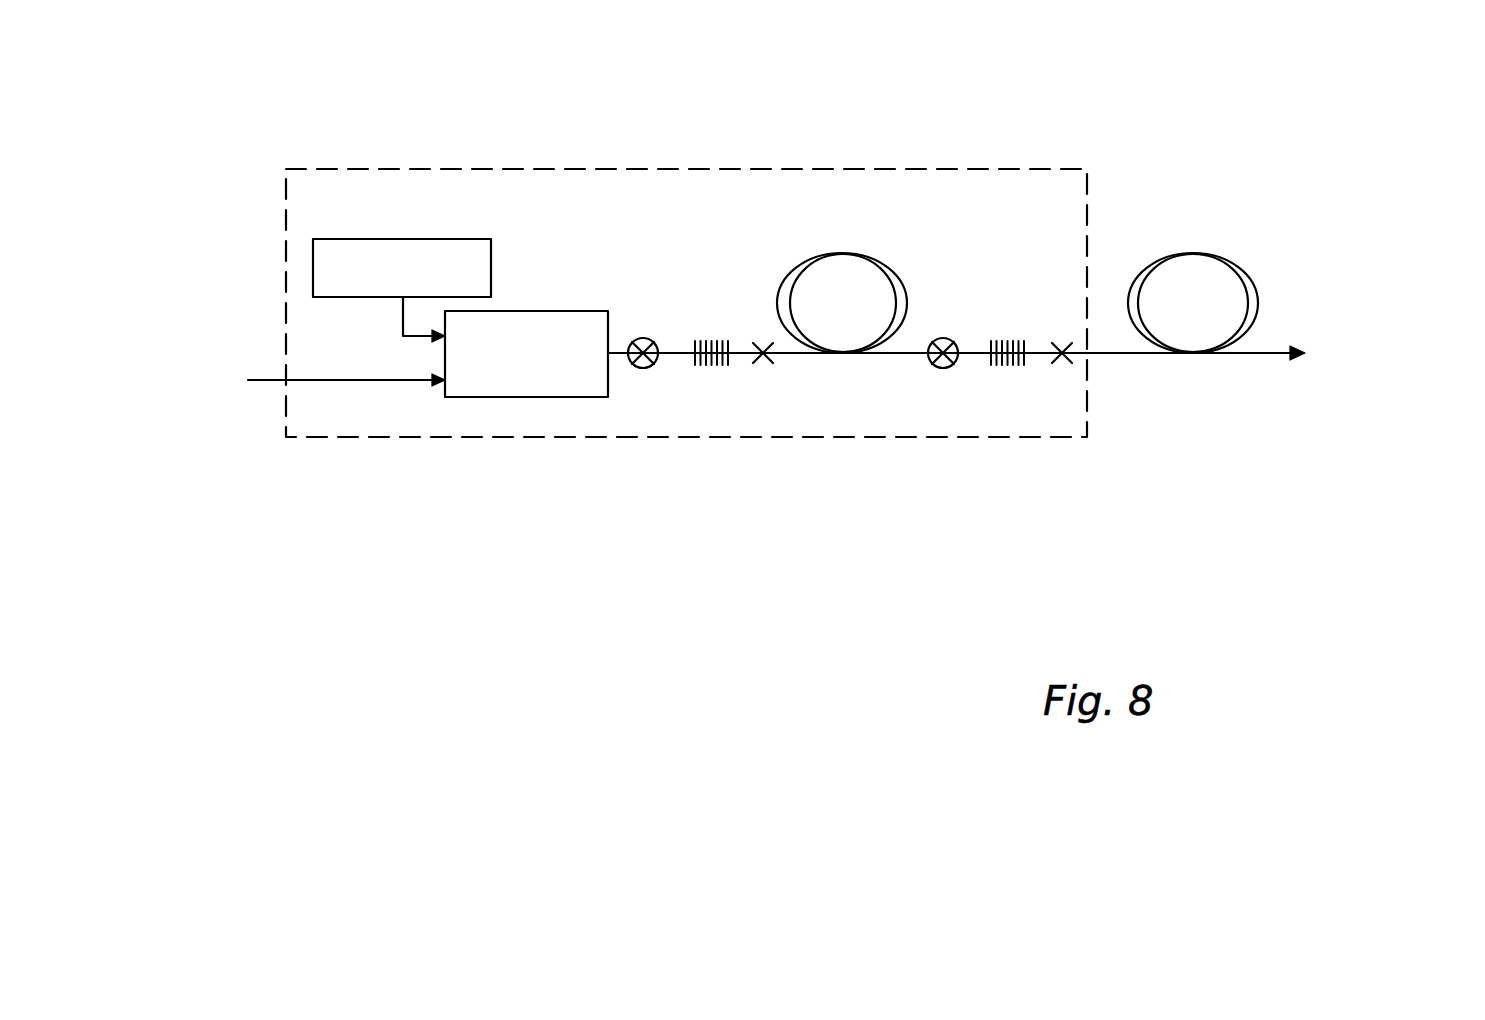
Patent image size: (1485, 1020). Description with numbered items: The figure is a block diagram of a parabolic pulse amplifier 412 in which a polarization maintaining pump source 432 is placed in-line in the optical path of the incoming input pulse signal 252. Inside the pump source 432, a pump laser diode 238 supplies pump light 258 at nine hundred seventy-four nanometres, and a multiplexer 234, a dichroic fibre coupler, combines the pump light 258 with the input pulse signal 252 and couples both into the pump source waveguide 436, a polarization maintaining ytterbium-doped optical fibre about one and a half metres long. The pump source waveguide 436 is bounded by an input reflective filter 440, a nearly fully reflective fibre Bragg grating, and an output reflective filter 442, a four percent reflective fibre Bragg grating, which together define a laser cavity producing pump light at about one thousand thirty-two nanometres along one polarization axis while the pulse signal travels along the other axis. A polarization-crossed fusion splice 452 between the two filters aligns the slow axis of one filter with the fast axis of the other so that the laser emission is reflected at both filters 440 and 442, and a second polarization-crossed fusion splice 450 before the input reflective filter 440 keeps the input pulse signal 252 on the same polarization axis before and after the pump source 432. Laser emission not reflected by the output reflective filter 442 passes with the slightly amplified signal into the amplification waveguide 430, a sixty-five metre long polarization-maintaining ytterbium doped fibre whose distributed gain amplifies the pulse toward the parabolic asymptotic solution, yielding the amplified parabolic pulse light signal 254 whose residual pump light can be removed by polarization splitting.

The parabolic pulse amplifier 412 is at (1152, 106).
The pump source 432 is at (952, 168).
The pump laser diode 238 is at (410, 239).
The multiplexer 234 is at (533, 311).
The pump light 258 is at (401, 317).
The input pulse signal 252 is at (350, 382).
The second polarization-crossed fusion splice 450 is at (642, 338).
The input reflective filter 440 is at (681, 367).
The pump source waveguide 436 is at (903, 272).
The polarization-crossed fusion splice 452 is at (950, 340).
The output reflective filter 442 is at (1040, 367).
The amplification waveguide 430 is at (1248, 272).
The amplified parabolic pulse light signal 254 is at (1253, 355).